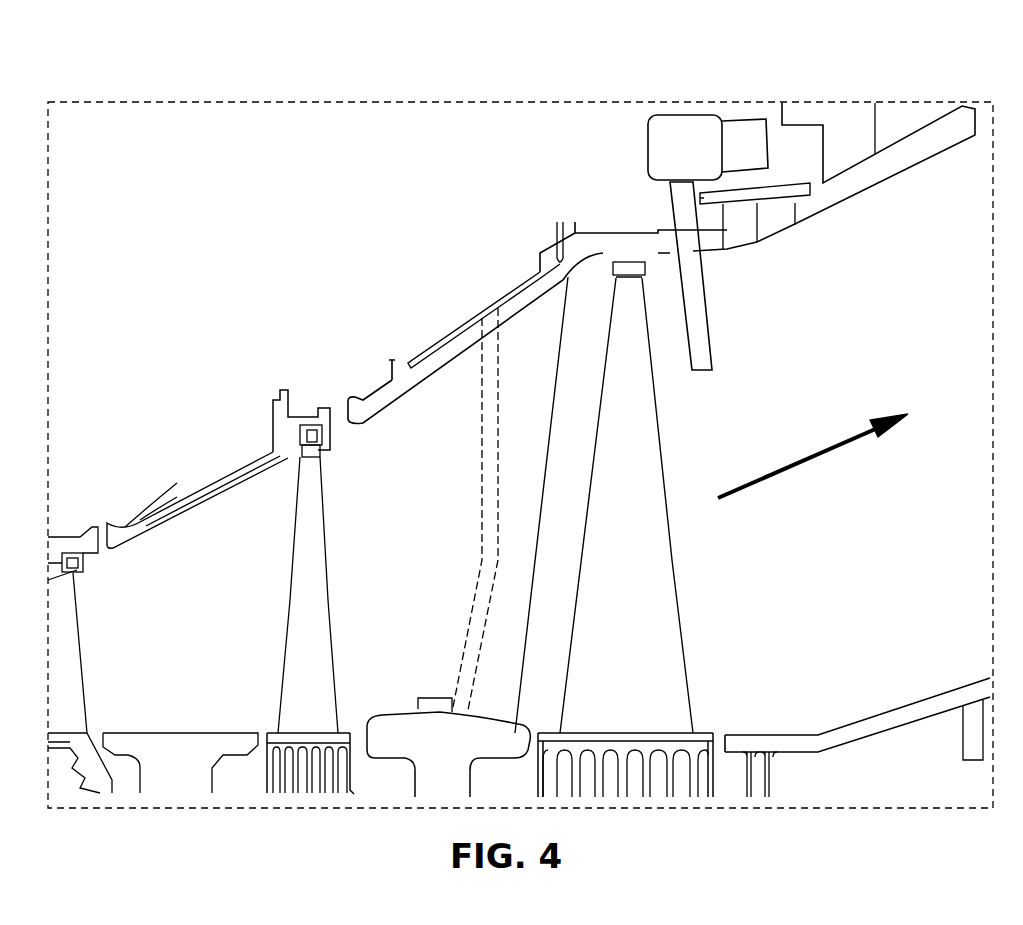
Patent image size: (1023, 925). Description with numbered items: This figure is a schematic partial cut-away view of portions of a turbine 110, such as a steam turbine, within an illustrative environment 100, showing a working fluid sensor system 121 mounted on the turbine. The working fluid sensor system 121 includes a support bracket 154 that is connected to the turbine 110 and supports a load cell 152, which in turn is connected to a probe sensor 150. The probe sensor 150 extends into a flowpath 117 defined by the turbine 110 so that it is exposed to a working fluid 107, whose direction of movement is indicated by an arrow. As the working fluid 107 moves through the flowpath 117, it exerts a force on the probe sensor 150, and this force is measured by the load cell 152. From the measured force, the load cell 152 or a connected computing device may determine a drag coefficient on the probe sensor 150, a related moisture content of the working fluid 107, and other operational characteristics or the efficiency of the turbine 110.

The illustrative environment 100 is at (679, 92).
The turbine 110 is at (73, 153).
The flowpath 117 is at (888, 296).
The working fluid sensor system 121 is at (606, 222).
The probe sensor 150 is at (672, 204).
The load cell 152 is at (665, 158).
The support bracket 154 is at (737, 143).
The working fluid 107 is at (813, 456).